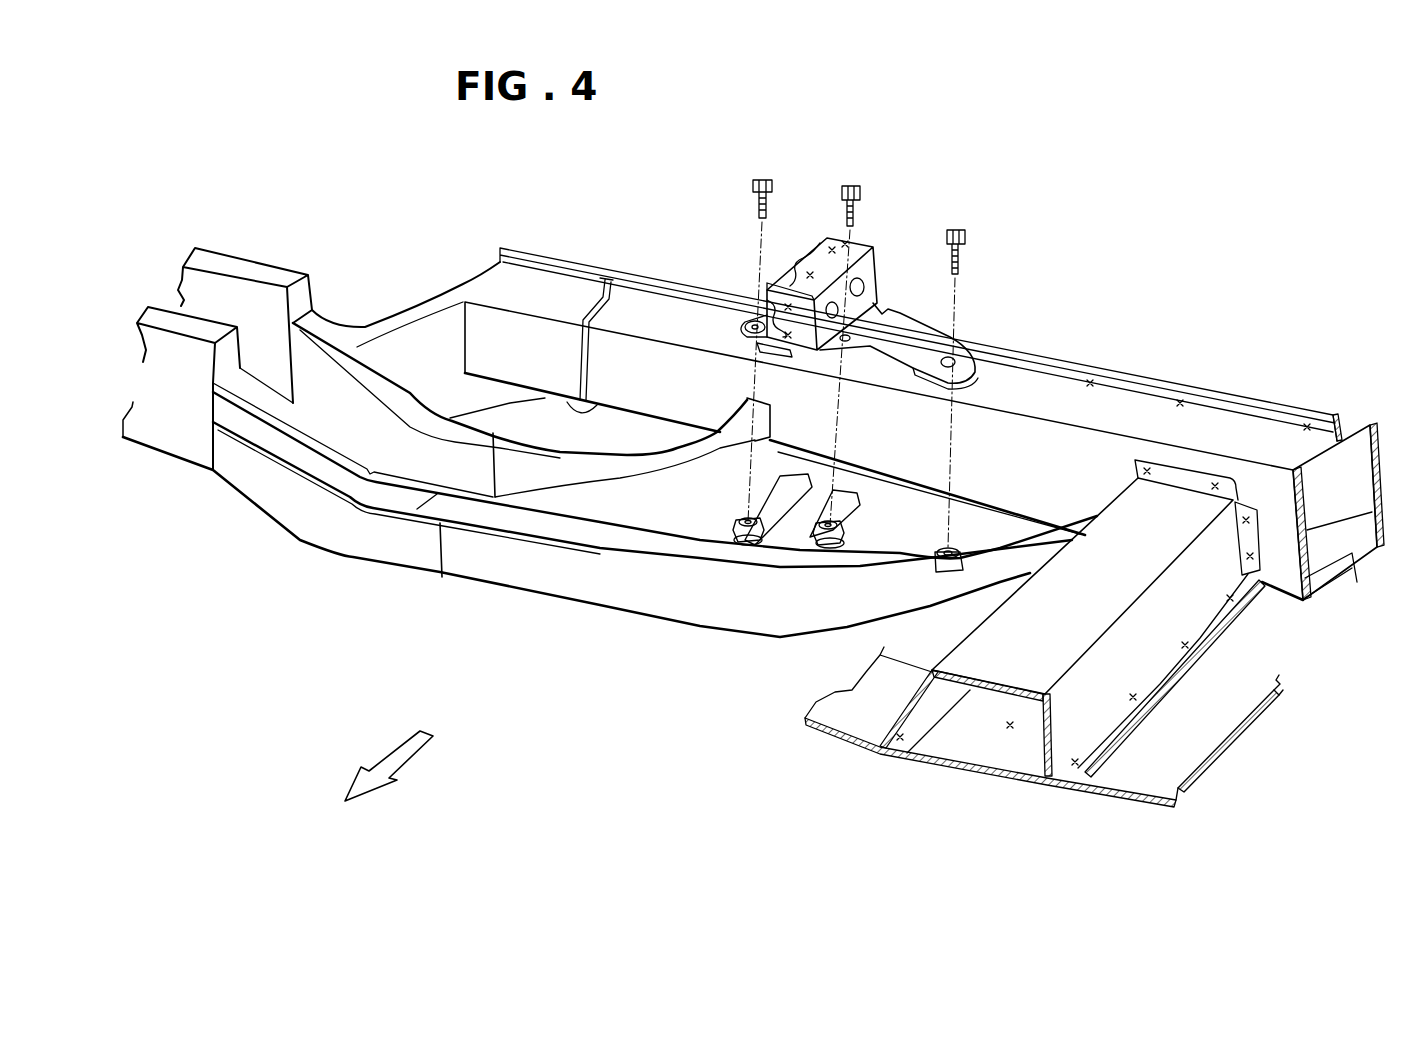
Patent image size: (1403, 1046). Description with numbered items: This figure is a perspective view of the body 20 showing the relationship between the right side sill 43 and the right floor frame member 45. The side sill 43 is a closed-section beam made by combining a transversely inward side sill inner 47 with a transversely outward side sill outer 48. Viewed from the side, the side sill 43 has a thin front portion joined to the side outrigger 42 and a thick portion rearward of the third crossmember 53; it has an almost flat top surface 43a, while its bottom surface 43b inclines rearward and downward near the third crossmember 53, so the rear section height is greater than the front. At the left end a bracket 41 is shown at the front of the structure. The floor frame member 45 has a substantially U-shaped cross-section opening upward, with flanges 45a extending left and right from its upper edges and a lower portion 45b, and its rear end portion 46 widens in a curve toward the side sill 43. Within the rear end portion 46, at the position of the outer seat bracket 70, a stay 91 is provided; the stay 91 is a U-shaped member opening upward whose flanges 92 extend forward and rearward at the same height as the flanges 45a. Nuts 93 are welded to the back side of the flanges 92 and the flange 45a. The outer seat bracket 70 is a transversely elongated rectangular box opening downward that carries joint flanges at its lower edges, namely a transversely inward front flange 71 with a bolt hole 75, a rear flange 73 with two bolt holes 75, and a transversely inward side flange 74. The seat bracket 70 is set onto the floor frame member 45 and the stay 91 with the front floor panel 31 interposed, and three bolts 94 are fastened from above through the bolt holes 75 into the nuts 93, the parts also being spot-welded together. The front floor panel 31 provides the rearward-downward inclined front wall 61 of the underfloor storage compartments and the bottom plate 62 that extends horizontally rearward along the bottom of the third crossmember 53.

The vehicle body rear structure 20 is at (236, 158).
The front floor panel 31 is at (1222, 780).
The rear end bracket 41 is at (237, 293).
The side outrigger 42 is at (413, 345).
The side sill 43 is at (1371, 294).
The top surface 43a is at (637, 317).
The bottom surface 43b is at (580, 405).
The floor frame member 45 is at (340, 580).
The flange 45a is at (573, 528).
The lower panel of side sill 45b is at (450, 577).
The rear end portion 46 is at (895, 530).
The side sill inner 47 is at (1262, 440).
The side sill outer 48 is at (1357, 423).
The third crossmember 53 is at (1187, 598).
The front wall 61 is at (852, 714).
The bottom plate 62 is at (1152, 764).
The outer seat bracket 70 is at (890, 246).
The front flange 71 is at (735, 318).
The rear flange 73 is at (962, 345).
The side flange 74 is at (757, 360).
The bolt hole 75 is at (748, 318).
The stay 91 is at (770, 540).
The flange 92 is at (733, 532).
The nut 93 is at (738, 540).
The bolt 94 is at (847, 187).